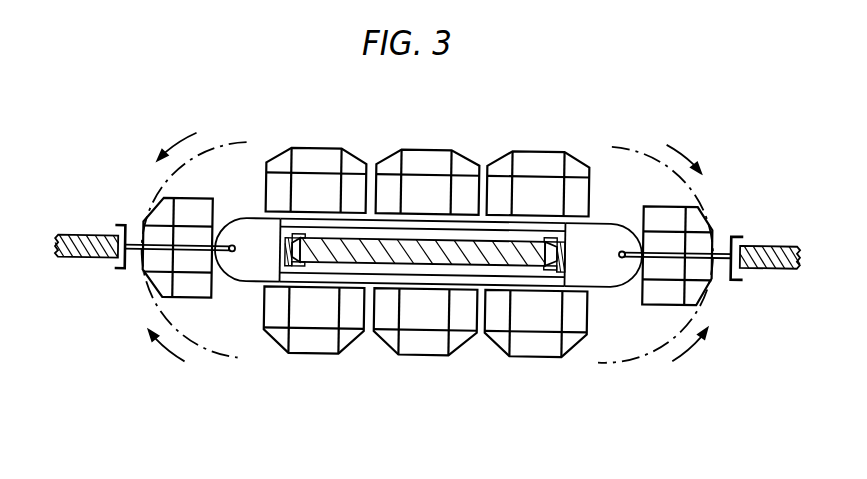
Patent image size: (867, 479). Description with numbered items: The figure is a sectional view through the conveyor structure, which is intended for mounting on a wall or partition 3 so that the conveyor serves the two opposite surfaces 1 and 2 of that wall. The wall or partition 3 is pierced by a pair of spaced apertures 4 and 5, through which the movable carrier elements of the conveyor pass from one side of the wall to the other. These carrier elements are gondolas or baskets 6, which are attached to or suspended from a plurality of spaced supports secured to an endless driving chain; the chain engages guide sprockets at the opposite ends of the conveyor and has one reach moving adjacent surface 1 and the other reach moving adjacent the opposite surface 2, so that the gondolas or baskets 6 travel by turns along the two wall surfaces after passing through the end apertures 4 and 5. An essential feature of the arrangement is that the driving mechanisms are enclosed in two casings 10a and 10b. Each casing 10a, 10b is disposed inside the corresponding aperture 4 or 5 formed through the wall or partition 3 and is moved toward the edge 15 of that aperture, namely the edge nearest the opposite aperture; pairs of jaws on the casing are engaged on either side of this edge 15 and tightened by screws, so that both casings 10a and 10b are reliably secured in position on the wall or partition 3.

The surface of wall 1 is at (525, 232).
The opposite surface of wall 2 is at (436, 272).
The wall or partition 3 is at (328, 252).
The aperture 4 is at (132, 273).
The aperture 5 is at (728, 275).
The gondolas or baskets 6 is at (323, 150).
The casing 10a is at (610, 225).
The casing 10b is at (247, 233).
The edge of aperture 15 is at (283, 262).